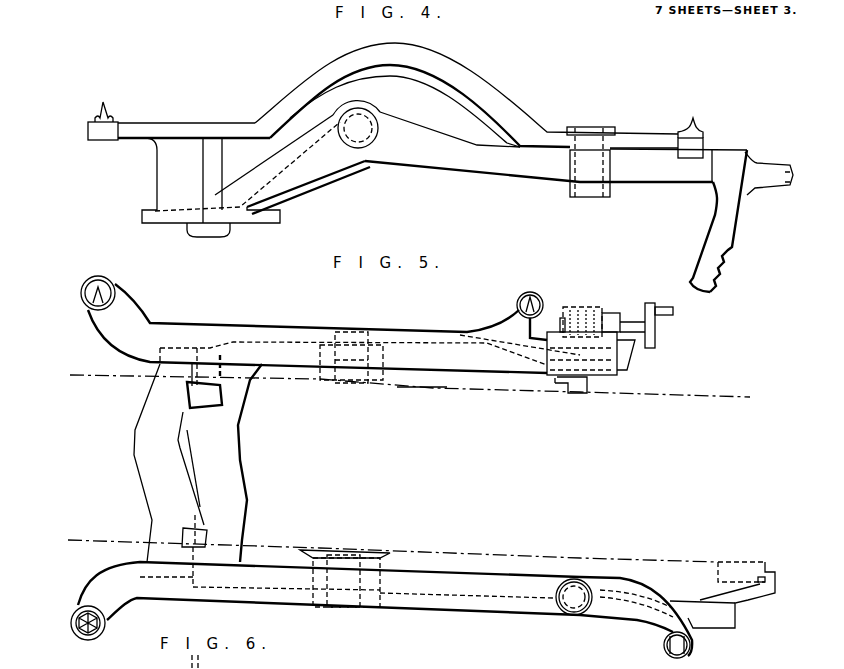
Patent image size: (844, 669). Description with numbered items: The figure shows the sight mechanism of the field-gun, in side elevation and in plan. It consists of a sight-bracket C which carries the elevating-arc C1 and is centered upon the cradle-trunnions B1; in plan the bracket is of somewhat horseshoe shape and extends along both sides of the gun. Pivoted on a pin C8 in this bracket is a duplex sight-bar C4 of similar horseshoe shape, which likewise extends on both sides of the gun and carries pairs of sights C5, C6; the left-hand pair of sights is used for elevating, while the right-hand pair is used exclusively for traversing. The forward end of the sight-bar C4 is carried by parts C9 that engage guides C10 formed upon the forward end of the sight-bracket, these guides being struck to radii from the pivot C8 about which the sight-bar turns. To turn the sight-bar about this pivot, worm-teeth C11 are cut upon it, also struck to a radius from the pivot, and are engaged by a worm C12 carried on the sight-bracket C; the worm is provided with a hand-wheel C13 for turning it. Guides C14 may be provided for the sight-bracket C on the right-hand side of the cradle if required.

In FIG. 4, the sight-bracket C is at (444, 162).
In FIG. 5, the sight-bracket C is at (417, 365).
In FIG. 4, the elevating-arc C1 is at (741, 221).
In FIG. 4, the duplex sight-bar C4 is at (398, 104).
In FIG. 5, the duplex sight-bar C4 is at (657, 623).
In FIG. 4, the sight C5 is at (103, 109).
In FIG. 5, the sight C5 is at (66, 628).
In FIG. 4, the sight C6 is at (691, 128).
In FIG. 5, the sight C6 is at (535, 295).
In FIG. 4, the pin C8 is at (591, 152).
In FIG. 5, the pin C8 is at (573, 612).
In FIG. 4, the carrying part C9 is at (208, 198).
In FIG. 5, the carrying part C9 is at (187, 388).
In FIG. 5, the guide C10 is at (192, 418).
In FIG. 5, the worm-teeth C11 is at (591, 353).
In FIG. 5, the worm C12 is at (583, 305).
In FIG. 5, the hand-wheel C13 is at (658, 325).
In FIG. 5, the guide C14 is at (572, 396).
In FIG. 4, the cradle-trunnion B1 is at (358, 128).
In FIG. 5, the cradle-trunnion B1 is at (345, 469).